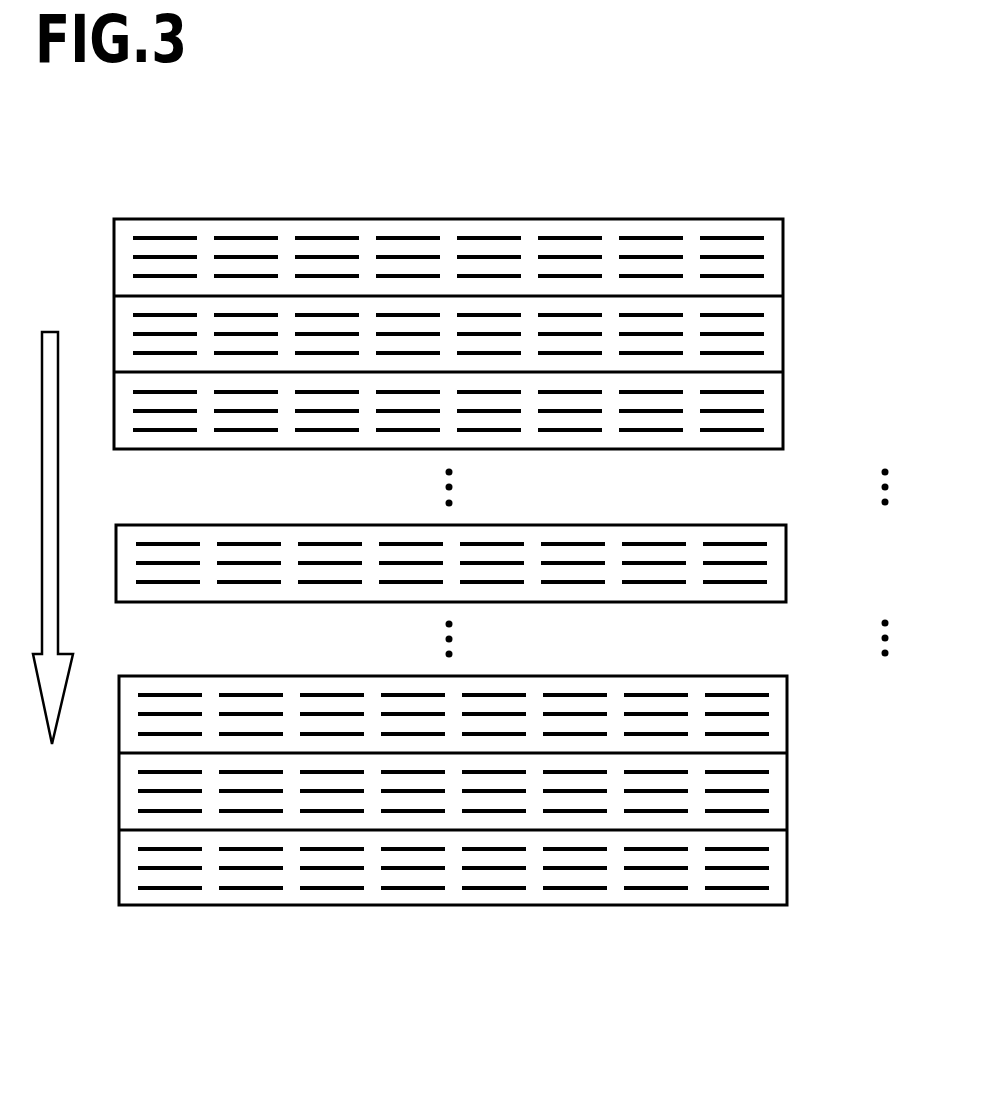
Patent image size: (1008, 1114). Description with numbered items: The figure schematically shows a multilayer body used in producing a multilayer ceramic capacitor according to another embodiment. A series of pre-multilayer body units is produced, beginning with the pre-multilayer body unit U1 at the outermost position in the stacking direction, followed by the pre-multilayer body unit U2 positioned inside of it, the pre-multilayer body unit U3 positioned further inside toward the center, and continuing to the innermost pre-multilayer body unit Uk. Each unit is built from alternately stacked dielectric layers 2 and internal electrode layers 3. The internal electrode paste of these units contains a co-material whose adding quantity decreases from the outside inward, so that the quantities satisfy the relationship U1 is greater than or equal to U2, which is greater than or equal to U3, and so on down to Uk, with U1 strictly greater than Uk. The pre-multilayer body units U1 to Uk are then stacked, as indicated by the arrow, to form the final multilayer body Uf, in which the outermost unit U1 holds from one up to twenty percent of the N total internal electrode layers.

The pre-multilayer body unit U1 is at (789, 265).
The pre-multilayer body unit U2 is at (789, 340).
The pre-multilayer body unit U3 is at (789, 420).
The pre-multilayer body unit Uk is at (790, 570).
The final multilayer body Uf is at (235, 916).
The dielectric layer 2 is at (388, 873).
The internal electrode layer 3 is at (430, 868).